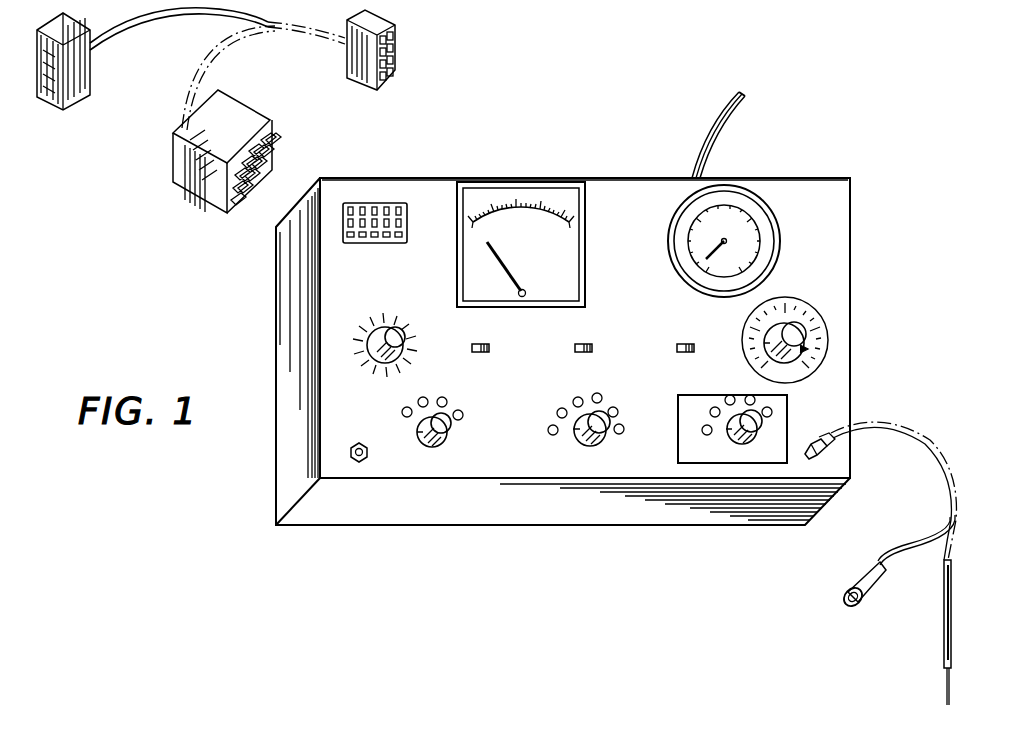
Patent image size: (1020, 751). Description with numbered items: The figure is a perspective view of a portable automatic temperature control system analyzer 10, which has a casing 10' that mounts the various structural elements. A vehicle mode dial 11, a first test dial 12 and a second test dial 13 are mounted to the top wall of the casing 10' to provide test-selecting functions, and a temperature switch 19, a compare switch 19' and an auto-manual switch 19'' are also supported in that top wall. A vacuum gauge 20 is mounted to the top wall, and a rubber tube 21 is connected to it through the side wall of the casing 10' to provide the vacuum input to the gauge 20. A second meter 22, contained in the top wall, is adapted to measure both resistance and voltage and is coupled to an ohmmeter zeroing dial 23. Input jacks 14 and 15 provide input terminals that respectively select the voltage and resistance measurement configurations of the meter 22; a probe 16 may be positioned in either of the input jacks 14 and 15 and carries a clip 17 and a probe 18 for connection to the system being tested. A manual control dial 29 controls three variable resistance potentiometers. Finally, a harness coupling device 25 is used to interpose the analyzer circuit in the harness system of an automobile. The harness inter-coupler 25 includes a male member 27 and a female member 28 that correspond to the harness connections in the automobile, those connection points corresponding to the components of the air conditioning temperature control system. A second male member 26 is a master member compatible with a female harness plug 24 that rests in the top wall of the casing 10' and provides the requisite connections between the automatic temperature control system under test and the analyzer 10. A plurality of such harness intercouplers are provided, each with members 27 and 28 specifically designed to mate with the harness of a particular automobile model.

The automatic temperature control system analyzer 10 is at (597, 351).
The casing 10' is at (603, 379).
The vehicle mode dial 11 is at (447, 430).
The first test dial 12 is at (603, 439).
The second test dial 13 is at (760, 435).
The input jack 14 is at (828, 450).
The input jack 15 is at (350, 452).
The probe 16 is at (870, 420).
The clip 17 is at (863, 579).
The probe 18 is at (944, 648).
The temperature switch 19 is at (488, 367).
The compare switch 19' is at (602, 364).
The auto-manual switch 19'' is at (689, 364).
The vacuum gauge 20 is at (740, 227).
The rubber tube 21 is at (717, 131).
The second meter 22 is at (534, 182).
The ohmmeter zeroing dial 23 is at (383, 330).
The female harness plug 24 is at (378, 203).
The harness coupling device 25 is at (172, 67).
The second male member 26 is at (245, 114).
The male member 27 is at (82, 78).
The female member 28 is at (385, 18).
The manual control dial 29 is at (795, 330).